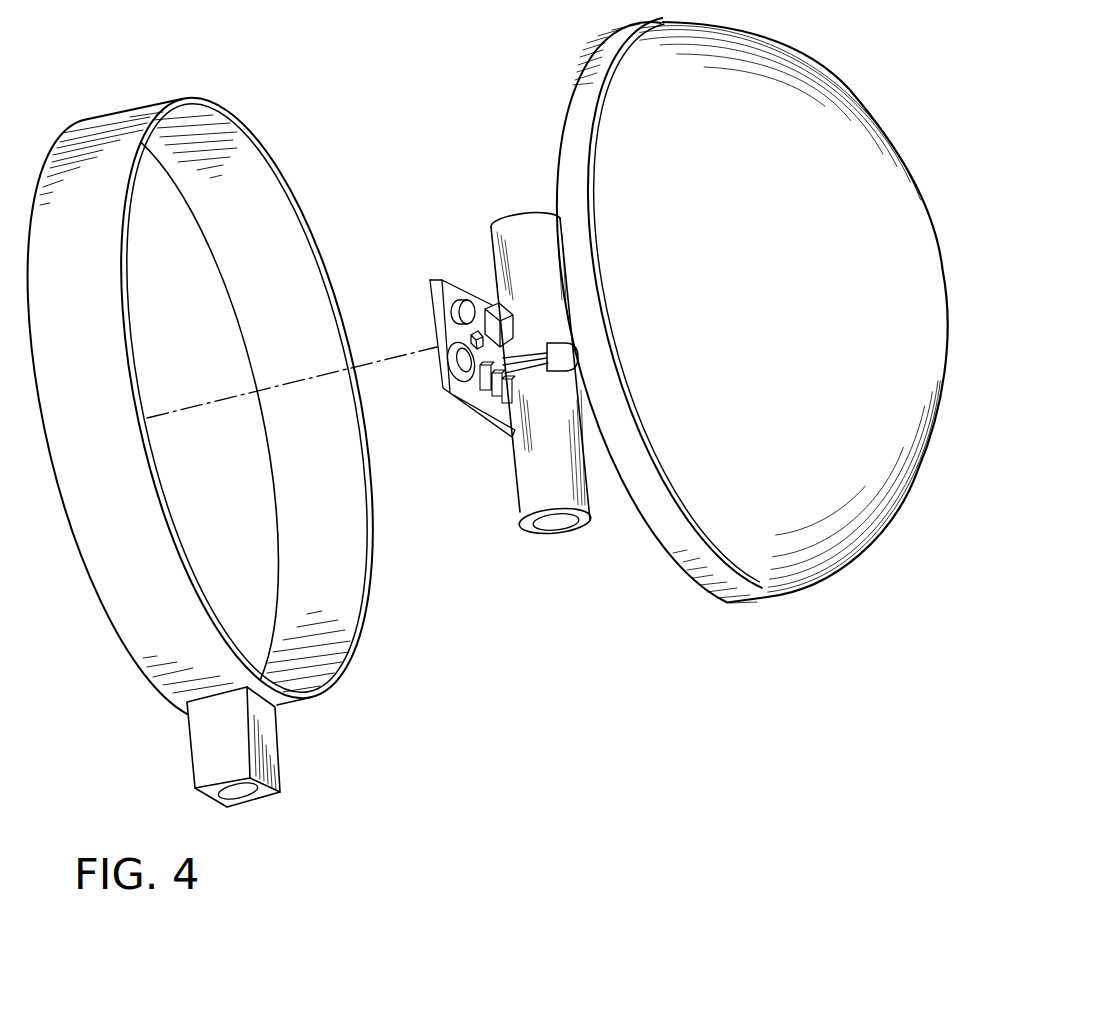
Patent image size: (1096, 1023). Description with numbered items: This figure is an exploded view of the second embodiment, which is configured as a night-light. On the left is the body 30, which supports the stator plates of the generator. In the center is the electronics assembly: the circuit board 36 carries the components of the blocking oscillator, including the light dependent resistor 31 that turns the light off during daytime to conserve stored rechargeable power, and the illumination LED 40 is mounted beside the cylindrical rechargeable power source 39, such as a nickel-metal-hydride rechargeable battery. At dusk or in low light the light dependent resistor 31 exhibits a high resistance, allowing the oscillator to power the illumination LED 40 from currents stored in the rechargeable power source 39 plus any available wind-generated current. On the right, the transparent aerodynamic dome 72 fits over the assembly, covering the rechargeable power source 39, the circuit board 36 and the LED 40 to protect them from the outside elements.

The body 30 is at (338, 681).
The light dependent resistor 31 is at (490, 304).
The circuit board 36 is at (437, 293).
The rechargeable power source 39 is at (538, 497).
The illumination LED 40 is at (560, 348).
The transparent aerodynamic dome 72 is at (773, 570).